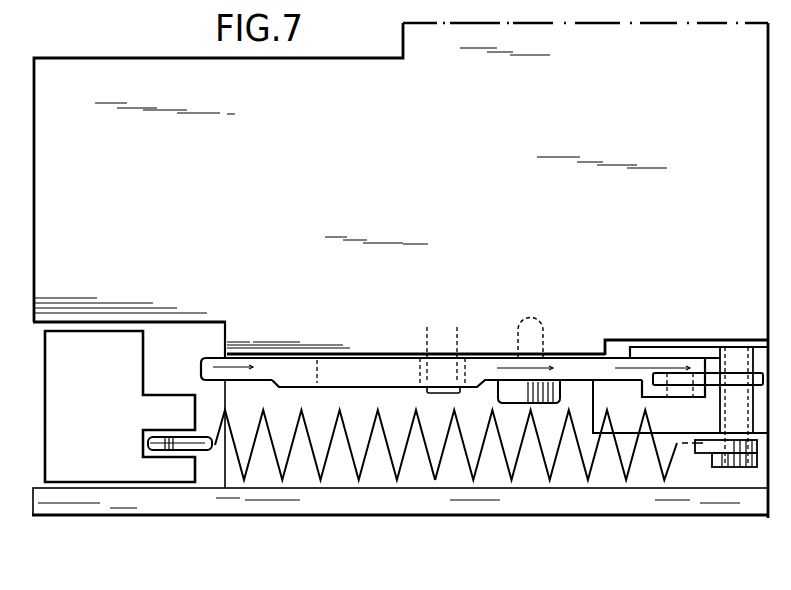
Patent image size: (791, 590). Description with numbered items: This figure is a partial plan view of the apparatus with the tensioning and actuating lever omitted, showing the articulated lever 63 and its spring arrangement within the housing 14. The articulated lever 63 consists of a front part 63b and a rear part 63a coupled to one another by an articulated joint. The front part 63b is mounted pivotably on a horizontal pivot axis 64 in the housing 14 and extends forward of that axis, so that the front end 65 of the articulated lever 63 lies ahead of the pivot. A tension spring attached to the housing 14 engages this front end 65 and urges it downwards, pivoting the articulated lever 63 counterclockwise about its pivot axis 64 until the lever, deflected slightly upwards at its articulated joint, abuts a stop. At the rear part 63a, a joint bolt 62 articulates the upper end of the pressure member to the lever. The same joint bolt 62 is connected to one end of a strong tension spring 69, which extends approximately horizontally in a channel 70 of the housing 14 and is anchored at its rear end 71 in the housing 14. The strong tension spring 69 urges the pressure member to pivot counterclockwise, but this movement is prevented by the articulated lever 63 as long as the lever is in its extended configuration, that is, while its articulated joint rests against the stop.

The housing 14 is at (251, 212).
The joint bolt 62 is at (736, 411).
The articulated lever 63 is at (592, 343).
The rear part 63a is at (712, 378).
The front part 63b is at (568, 365).
The horizontal pivot axis 64 is at (533, 332).
The front end 65 is at (262, 368).
The strong tension spring 69 is at (590, 477).
The channel 70 is at (387, 482).
The rear end 71 is at (215, 450).